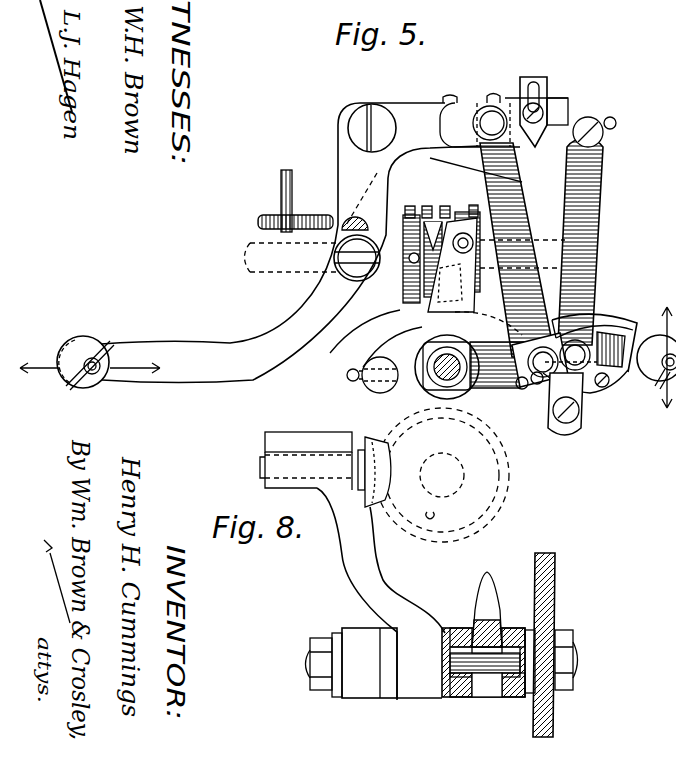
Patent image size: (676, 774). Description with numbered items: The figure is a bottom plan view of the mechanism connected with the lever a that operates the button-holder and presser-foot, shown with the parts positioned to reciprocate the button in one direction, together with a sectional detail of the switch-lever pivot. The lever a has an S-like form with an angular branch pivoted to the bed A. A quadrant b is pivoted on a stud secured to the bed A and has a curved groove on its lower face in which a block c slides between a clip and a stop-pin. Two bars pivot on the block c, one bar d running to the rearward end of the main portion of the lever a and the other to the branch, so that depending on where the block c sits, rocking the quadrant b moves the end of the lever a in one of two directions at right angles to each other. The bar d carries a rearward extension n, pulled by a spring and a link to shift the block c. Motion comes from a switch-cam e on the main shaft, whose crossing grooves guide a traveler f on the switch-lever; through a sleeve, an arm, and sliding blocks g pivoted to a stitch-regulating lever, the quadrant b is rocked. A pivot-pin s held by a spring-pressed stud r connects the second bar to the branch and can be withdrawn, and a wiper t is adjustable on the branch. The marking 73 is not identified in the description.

In FIG. 5, the lever a is at (334, 239).
In FIG. 5, the pivot-pin s is at (490, 123).
In FIG. 5, the spring-pressed stud r is at (499, 99).
In FIG. 5, the wiper t is at (540, 82).
In FIG. 5, the bar or rod d is at (587, 231).
In FIG. 5, the switch-cam e is at (434, 257).
In FIG. 8, the traveler f is at (373, 445).
In FIG. 8, the block g is at (507, 710).
In FIG. 5, the quadrant b is at (612, 318).
In FIG. 5, the block c is at (551, 360).
In FIG. 5, the extension n is at (568, 438).
In FIG. 8, the bed A is at (555, 600).
In FIG. 8, the hub 73 is at (442, 475).